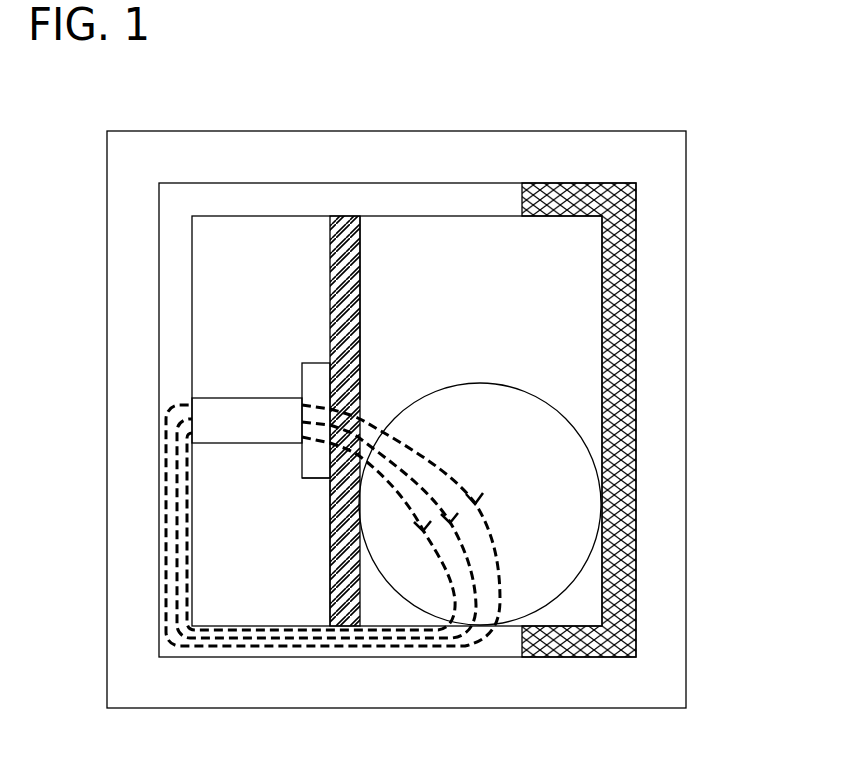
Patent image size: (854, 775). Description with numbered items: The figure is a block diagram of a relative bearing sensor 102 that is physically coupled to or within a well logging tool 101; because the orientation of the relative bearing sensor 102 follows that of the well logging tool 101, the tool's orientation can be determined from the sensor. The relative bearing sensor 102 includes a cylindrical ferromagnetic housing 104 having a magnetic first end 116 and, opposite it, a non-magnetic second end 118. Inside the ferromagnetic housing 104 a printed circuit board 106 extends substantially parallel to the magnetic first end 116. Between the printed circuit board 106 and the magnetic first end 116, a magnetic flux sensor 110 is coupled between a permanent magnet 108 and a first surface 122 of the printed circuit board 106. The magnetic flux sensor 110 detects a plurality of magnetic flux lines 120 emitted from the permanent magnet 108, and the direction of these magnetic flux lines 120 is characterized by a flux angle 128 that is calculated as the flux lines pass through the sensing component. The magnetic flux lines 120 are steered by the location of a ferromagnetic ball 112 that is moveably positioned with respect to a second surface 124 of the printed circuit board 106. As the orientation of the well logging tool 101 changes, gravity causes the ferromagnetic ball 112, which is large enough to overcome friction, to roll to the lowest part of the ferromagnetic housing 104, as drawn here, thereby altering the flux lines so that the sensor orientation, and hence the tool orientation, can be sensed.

The well logging tool 101 is at (562, 131).
The relative bearing sensor 102 is at (387, 167).
The cylindrical ferromagnetic housing 104 is at (287, 200).
The printed circuit board 106 is at (335, 236).
The permanent magnet 108 is at (247, 398).
The magnetic flux sensor 110 is at (318, 370).
The ferromagnetic ball 112 is at (560, 413).
The magnetic first end 116 is at (159, 330).
The non-magnetic second end 118 is at (625, 289).
The magnetic flux lines 120 is at (500, 585).
The first surface of PCB 122 is at (330, 578).
The second surface of PCB 124 is at (360, 305).
The flux angle 128 is at (314, 458).